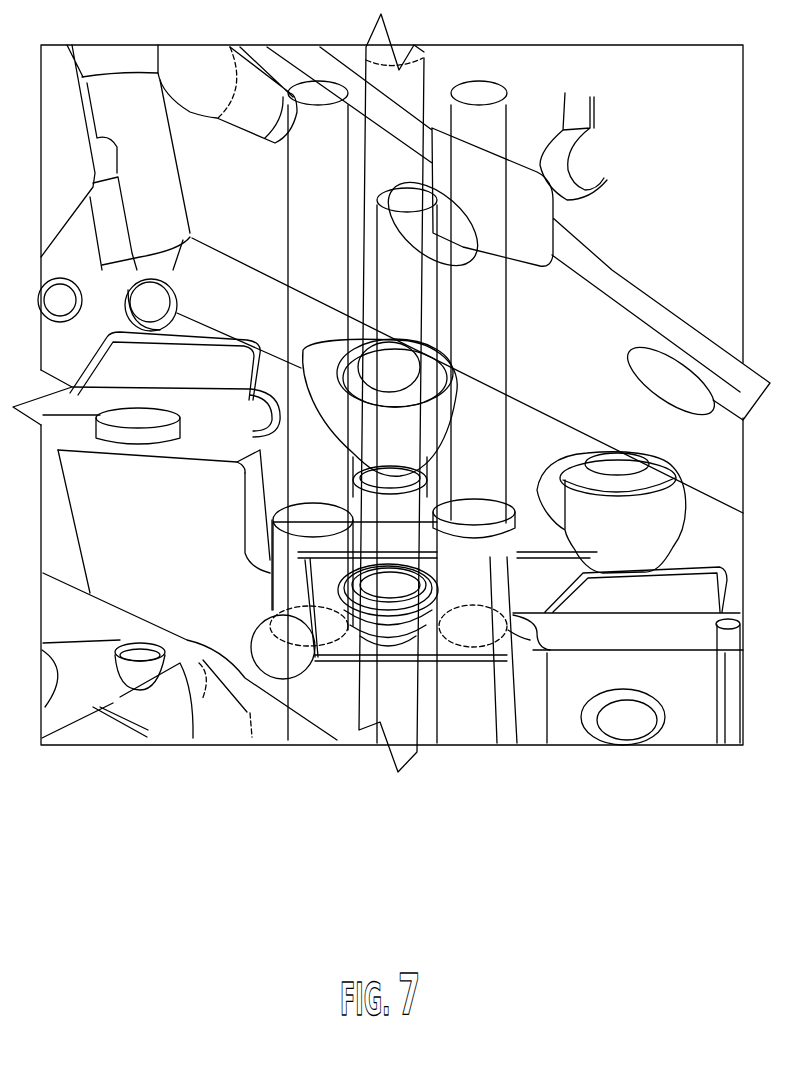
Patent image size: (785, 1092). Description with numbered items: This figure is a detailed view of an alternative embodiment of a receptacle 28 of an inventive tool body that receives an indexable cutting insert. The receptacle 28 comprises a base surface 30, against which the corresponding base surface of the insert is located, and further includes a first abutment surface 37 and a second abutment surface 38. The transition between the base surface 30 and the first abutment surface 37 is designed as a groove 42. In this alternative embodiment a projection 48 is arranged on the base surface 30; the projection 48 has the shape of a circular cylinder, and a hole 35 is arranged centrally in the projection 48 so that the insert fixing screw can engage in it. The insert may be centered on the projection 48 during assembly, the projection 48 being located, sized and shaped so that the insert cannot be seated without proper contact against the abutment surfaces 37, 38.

The receptacle 28 is at (318, 705).
The base surface 30 is at (506, 616).
The hole 35 is at (397, 582).
The first abutment surface 37 is at (271, 607).
The second abutment surface 38 is at (467, 500).
The groove 42 is at (270, 667).
The projection 48 is at (381, 625).